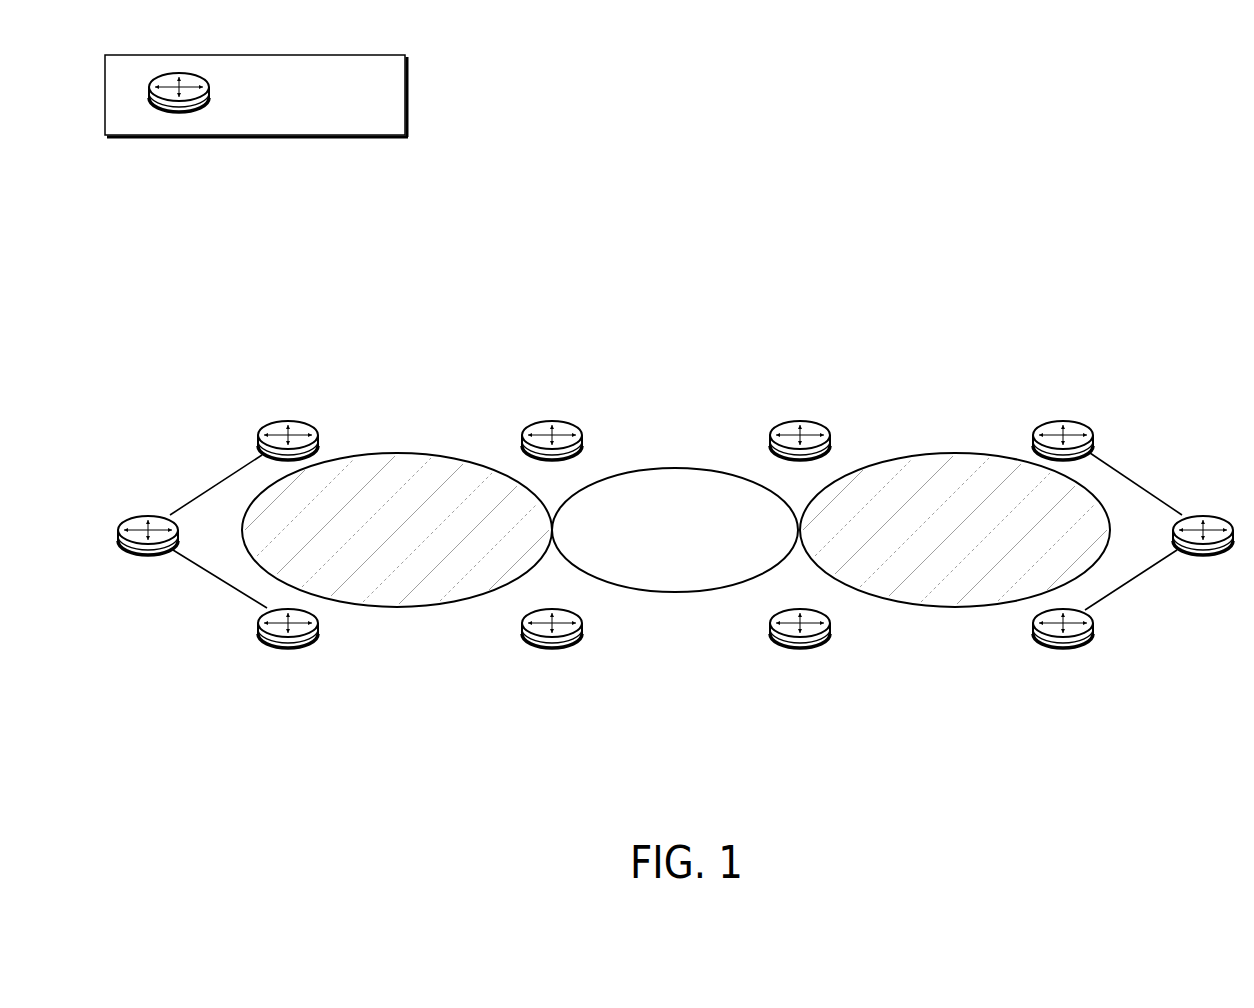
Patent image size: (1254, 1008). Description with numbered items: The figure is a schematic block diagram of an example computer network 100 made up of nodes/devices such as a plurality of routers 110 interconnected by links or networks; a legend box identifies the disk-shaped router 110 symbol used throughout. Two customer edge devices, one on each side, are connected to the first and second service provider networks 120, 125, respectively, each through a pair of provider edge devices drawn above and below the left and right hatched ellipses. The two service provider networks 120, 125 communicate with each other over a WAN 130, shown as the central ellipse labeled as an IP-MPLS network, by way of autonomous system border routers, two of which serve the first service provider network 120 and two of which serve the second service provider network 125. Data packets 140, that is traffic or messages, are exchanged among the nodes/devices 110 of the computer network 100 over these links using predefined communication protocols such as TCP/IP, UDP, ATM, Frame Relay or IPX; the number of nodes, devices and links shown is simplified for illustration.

The computer network 100 is at (1168, 112).
The routers 110 is at (256, 96).
The service provider network SPN-1 120 is at (461, 601).
The service provider network SPN-2 125 is at (888, 603).
The WAN 130 is at (692, 566).
The data packets 140 is at (460, 403).